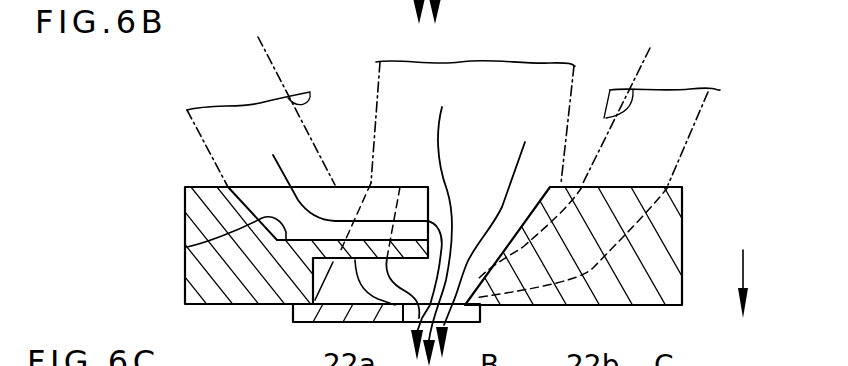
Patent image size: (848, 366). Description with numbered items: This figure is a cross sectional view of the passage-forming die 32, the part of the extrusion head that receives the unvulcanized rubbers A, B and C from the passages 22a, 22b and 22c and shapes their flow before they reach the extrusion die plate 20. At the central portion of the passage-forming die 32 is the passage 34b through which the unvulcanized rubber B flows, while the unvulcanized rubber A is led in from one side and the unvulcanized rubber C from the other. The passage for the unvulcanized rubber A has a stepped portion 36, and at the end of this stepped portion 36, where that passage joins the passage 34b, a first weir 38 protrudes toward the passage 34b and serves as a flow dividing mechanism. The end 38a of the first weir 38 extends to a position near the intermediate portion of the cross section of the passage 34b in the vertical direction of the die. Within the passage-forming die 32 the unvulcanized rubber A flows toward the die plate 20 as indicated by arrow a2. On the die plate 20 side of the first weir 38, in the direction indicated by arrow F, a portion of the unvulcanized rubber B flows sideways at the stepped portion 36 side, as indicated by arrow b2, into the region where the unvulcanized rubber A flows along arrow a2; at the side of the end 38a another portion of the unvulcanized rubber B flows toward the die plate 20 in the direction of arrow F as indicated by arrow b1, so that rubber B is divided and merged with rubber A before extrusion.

The extrusion die plate 20 is at (288, 315).
The passage for unvulcanized rubber A 22a is at (270, 101).
The passage for unvulcanized rubber B 22b is at (383, 92).
The passage for unvulcanized rubber C 22c is at (635, 99).
The passage-forming die 32 is at (180, 215).
The passage for unvulcanized rubber B 34b is at (535, 187).
The stepped portion 36 is at (187, 246).
The first weir 38 is at (325, 307).
The end of the first weir 38a is at (449, 220).
The unvulcanized rubber A is at (224, 123).
The unvulcanized rubber B is at (493, 78).
The unvulcanized rubber C is at (660, 113).
The direction toward the die plate F is at (745, 266).
The flow direction of unvulcanized rubber A a2 is at (277, 163).
The flow direction of unvulcanized rubber B b1 is at (517, 173).
The flow direction of unvulcanized rubber B b2 is at (400, 183).